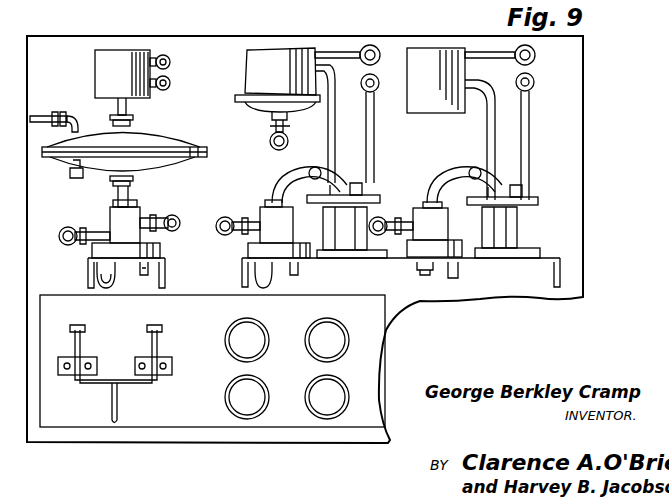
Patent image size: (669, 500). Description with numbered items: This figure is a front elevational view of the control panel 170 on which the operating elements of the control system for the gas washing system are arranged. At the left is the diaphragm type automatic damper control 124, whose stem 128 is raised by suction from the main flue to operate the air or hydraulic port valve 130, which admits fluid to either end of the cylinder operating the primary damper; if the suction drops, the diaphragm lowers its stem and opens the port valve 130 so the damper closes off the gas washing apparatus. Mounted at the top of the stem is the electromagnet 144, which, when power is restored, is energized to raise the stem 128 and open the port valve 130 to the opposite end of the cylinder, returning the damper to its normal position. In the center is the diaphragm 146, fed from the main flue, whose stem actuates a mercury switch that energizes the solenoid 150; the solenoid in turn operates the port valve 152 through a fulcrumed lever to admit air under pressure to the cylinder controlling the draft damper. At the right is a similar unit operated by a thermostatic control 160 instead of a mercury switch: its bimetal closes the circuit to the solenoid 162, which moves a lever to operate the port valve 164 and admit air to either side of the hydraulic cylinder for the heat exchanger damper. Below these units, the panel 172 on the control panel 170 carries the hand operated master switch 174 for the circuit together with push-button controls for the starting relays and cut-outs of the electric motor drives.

The diaphragm type automatic damper control 124 is at (173, 135).
The stem 128 is at (128, 193).
The port valve 130 is at (110, 222).
The electromagnet 144 is at (95, 75).
The diaphragm 146 is at (250, 77).
The solenoid 150 is at (380, 205).
The port valve 152 is at (287, 237).
The thermostatic control 160 is at (447, 100).
The solenoid 162 is at (530, 232).
The port valve 164 is at (437, 228).
The control panel 170 is at (591, 90).
The panel 172 is at (92, 413).
The hand operated master switch 174 is at (113, 405).